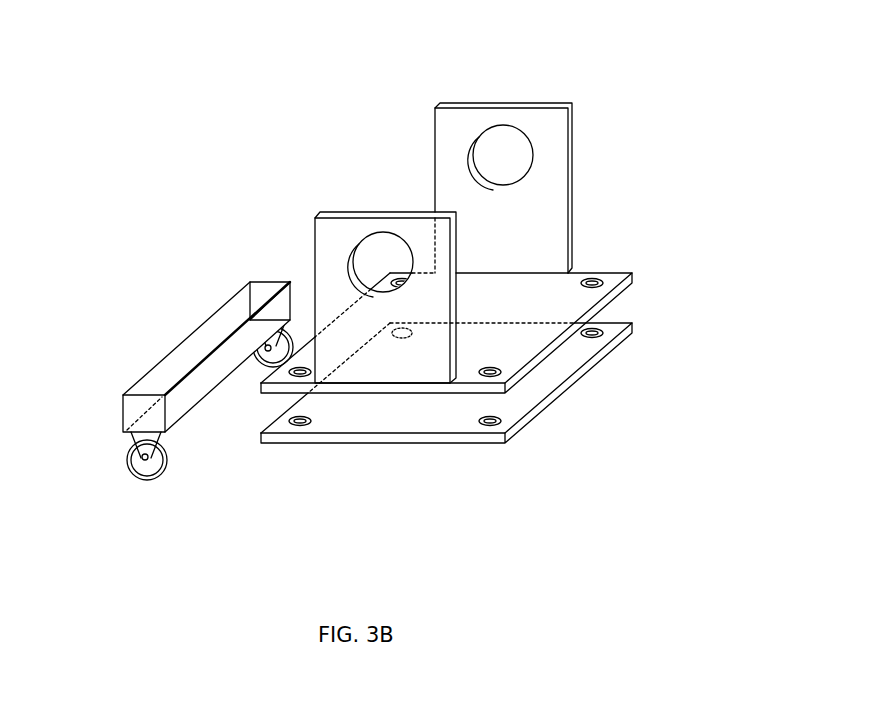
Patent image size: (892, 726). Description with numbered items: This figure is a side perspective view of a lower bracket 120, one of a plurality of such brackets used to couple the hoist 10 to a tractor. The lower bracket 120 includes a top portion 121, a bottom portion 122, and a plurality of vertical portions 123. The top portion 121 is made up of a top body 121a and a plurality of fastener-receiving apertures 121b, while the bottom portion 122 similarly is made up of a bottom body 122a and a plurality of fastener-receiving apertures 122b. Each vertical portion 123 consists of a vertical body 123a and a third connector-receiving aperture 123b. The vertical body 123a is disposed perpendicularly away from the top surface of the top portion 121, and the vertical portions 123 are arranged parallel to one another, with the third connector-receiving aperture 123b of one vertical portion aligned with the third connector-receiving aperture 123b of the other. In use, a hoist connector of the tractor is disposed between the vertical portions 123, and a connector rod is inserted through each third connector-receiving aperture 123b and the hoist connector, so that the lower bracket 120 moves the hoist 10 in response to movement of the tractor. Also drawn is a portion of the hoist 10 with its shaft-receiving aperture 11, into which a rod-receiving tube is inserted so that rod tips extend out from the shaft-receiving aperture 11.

The lower bracket 120 is at (247, 88).
The top portion 121 is at (662, 272).
The top body 121a is at (632, 273).
The fastener-receiving apertures 121b is at (598, 278).
The bottom portion 122 is at (670, 335).
The bottom body 122a is at (548, 381).
The fastener-receiving apertures 122b is at (600, 338).
The vertical portions 123 is at (424, 98).
The vertical body 123a is at (562, 103).
The third connector-receiving aperture 123b is at (500, 140).
The hoist 10 is at (208, 332).
The shaft-receiving aperture 11 is at (130, 412).